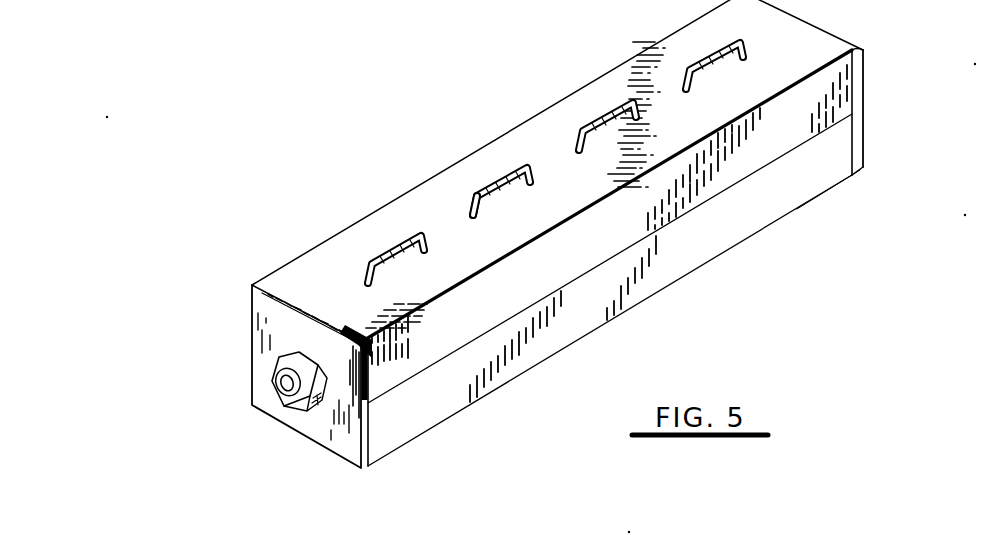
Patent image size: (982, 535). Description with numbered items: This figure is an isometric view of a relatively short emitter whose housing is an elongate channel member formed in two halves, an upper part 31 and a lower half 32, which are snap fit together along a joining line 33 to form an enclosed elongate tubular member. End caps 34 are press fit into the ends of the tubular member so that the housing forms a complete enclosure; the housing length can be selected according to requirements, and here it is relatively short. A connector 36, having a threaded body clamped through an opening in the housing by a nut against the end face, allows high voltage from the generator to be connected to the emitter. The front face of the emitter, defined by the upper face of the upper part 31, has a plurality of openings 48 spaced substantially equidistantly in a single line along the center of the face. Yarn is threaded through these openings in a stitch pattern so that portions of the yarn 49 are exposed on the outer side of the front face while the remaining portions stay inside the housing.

The upper part 31 is at (535, 139).
The lower half of channel member 32 is at (718, 235).
The joining line 33 is at (777, 163).
The end cap 34 is at (868, 116).
The connector 36 is at (271, 391).
The opening 48 is at (482, 224).
The exposed yarn portion 49 is at (494, 179).